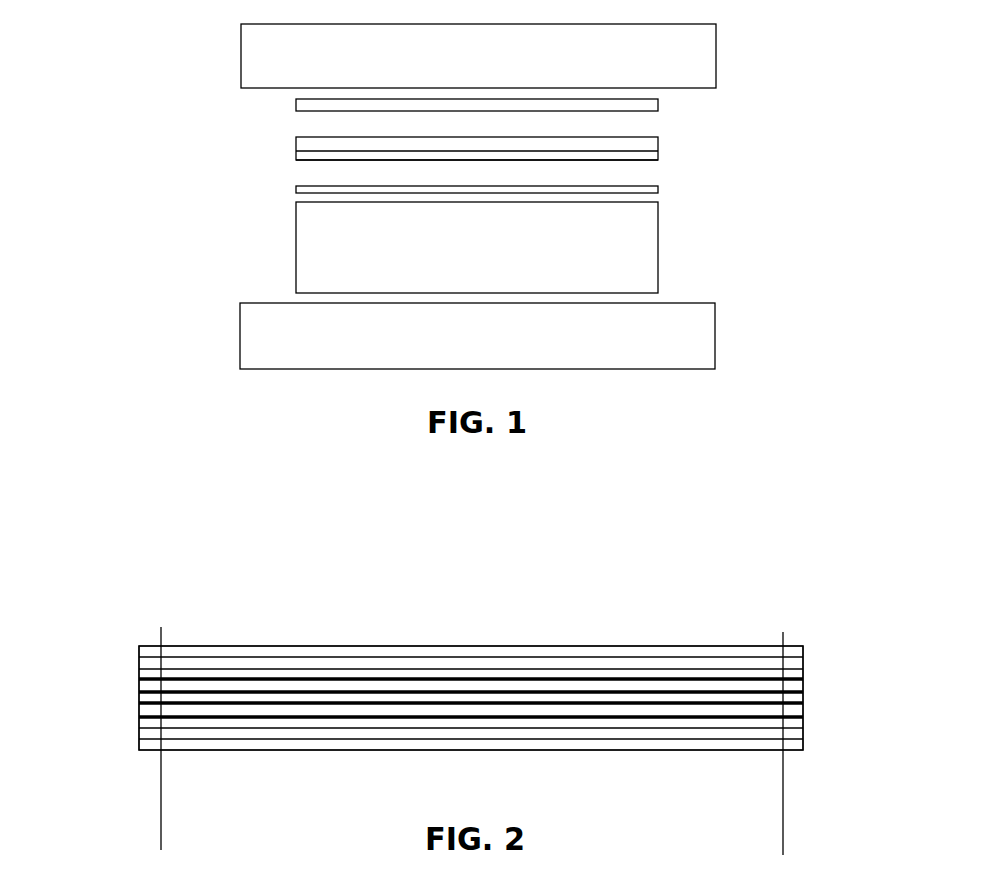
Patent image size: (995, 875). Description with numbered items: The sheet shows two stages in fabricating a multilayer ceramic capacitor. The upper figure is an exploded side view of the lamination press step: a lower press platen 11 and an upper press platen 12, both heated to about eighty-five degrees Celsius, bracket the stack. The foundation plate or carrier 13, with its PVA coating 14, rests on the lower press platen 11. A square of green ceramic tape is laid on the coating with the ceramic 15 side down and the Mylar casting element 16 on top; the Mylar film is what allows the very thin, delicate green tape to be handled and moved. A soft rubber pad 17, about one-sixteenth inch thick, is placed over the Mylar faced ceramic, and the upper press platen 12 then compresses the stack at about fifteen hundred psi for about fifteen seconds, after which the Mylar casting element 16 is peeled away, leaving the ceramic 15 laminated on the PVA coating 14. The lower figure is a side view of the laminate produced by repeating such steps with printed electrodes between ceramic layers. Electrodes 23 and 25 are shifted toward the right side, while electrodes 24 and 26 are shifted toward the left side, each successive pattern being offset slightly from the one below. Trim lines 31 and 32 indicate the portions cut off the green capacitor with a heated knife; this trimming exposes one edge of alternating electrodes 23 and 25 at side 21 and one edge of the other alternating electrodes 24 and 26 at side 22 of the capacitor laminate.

In FIG. 1, the lower press platen 11 is at (240, 340).
In FIG. 1, the upper press platen 12 is at (716, 58).
In FIG. 1, the foundation plate or carrier 13 is at (658, 262).
In FIG. 1, the PVA coating 14 is at (658, 190).
In FIG. 1, the ceramic 15 is at (296, 157).
In FIG. 1, the Mylar casting element 16 is at (658, 148).
In FIG. 1, the rubber pad 17 is at (296, 106).
In FIG. 2, the side 21 is at (817, 656).
In FIG. 2, the side 22 is at (125, 652).
In FIG. 2, the electrode 23 is at (783, 680).
In FIG. 2, the electrode 24 is at (158, 691).
In FIG. 2, the electrode 25 is at (783, 705).
In FIG. 2, the electrode 26 is at (158, 717).
In FIG. 2, the trim line 31 is at (783, 817).
In FIG. 2, the trim line 32 is at (161, 812).